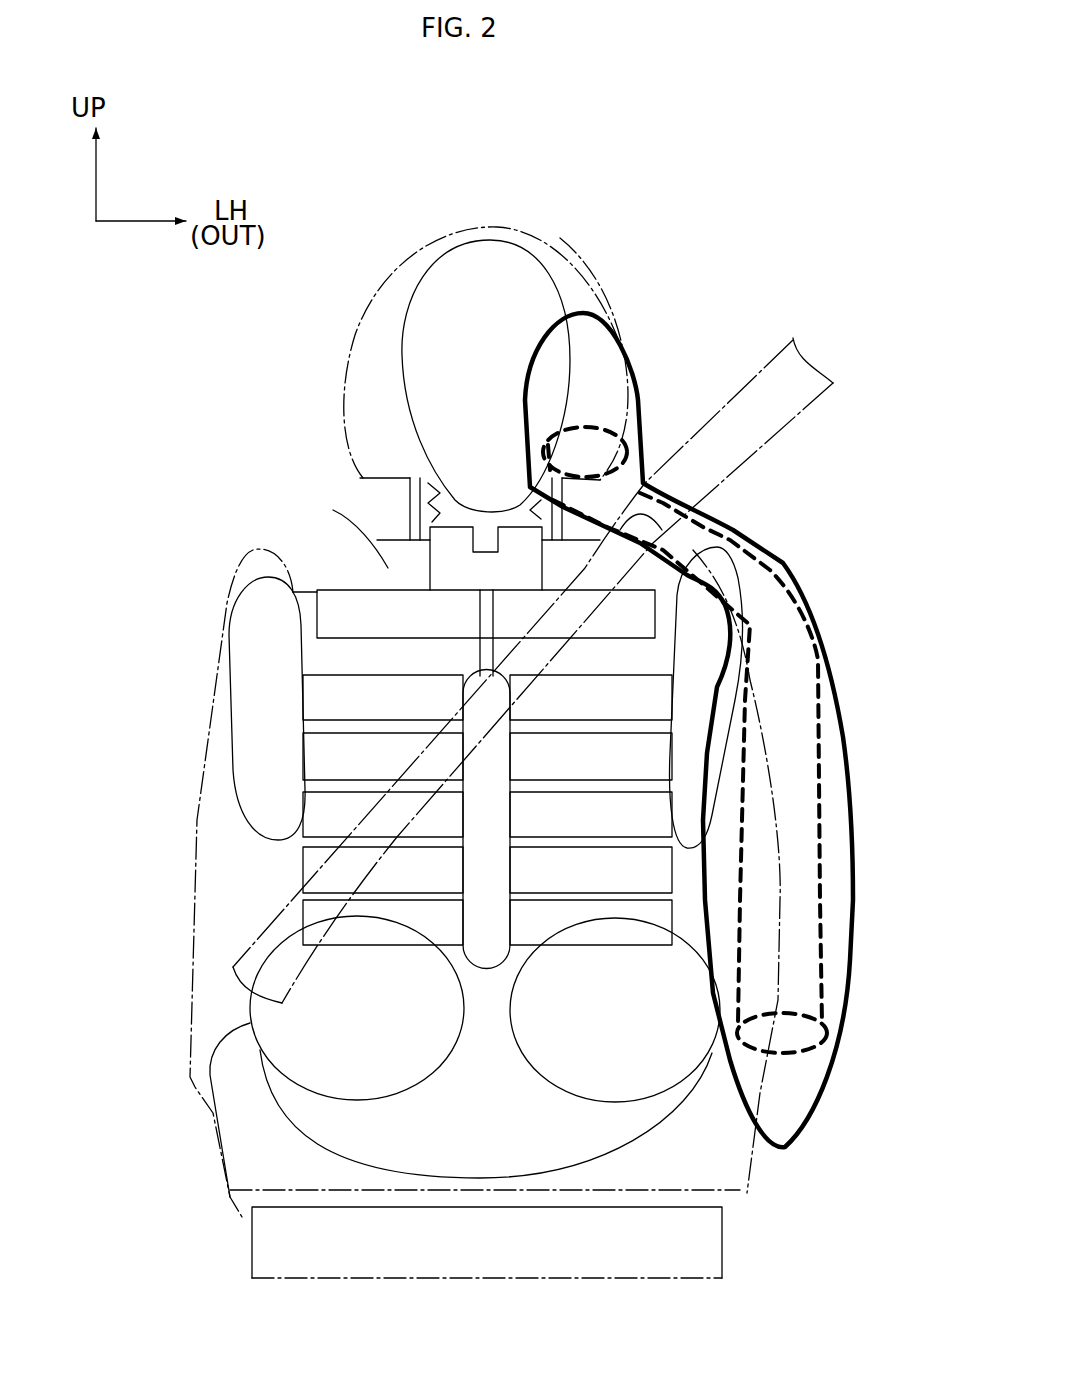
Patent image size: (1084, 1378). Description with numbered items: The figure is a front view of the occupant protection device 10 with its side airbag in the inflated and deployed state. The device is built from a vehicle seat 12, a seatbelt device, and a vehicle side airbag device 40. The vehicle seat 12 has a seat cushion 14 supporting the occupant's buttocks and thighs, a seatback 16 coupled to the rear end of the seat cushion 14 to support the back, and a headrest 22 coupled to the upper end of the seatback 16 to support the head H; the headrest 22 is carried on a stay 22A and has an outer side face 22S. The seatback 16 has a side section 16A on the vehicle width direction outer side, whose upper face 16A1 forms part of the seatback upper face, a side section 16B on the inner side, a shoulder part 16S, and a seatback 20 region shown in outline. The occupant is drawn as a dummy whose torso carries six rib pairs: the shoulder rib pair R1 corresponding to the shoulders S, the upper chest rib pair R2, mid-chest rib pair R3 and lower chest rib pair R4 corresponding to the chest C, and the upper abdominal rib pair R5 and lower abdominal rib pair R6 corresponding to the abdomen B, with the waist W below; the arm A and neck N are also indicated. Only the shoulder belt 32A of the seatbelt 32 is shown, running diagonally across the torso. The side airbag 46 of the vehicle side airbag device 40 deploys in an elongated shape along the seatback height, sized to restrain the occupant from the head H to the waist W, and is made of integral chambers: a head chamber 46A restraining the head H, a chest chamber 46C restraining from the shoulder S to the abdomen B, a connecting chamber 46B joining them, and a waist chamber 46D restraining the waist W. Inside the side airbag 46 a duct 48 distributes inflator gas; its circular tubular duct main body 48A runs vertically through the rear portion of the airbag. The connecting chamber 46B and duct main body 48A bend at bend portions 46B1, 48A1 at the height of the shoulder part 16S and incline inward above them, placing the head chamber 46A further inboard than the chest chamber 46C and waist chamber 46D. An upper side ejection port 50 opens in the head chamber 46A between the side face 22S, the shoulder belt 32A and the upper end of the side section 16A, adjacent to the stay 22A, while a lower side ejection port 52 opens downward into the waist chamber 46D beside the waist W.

The occupant protection device 10 is at (680, 178).
The vehicle seat 12 is at (158, 1015).
The seat cushion 14 is at (213, 1147).
The seatback 16 is at (186, 927).
The side section 16A is at (777, 807).
The upper face 16A1 is at (665, 493).
The side section 16B is at (197, 838).
The shoulder part 16S is at (767, 563).
The seat back frame 20 is at (190, 963).
The headrest 22 is at (351, 377).
The stay 22A is at (537, 510).
The side face 22S is at (597, 290).
The seatbelt 32 is at (753, 376).
The shoulder belt 32A is at (500, 718).
The vehicle side airbag device 40 is at (845, 627).
The side airbag 46 is at (862, 933).
The head chamber 46A is at (622, 378).
The connecting chamber 46B is at (710, 513).
The bend portion 46B1 is at (775, 588).
The chest chamber 46C is at (845, 733).
The waist chamber 46D is at (823, 1097).
The duct 48 is at (830, 863).
The duct main body 48A is at (835, 697).
The bend portion 48A1 is at (790, 597).
The upper side ejection port 50 is at (597, 427).
The lower side ejection port 52 is at (827, 1027).
The head H is at (487, 238).
The neck of occupant N is at (427, 513).
The shoulders S is at (233, 588).
The arm of occupant A is at (222, 652).
The chest C is at (266, 720).
The abdomen B is at (251, 890).
The waist W is at (263, 1073).
The shoulder rib pair R1 is at (333, 510).
The upper chest rib pair R2 is at (313, 693).
The mid-chest rib pair R3 is at (313, 760).
The lower chest rib pair R4 is at (317, 810).
The upper abdominal rib pair R5 is at (312, 860).
The lower abdominal rib pair R6 is at (302, 917).